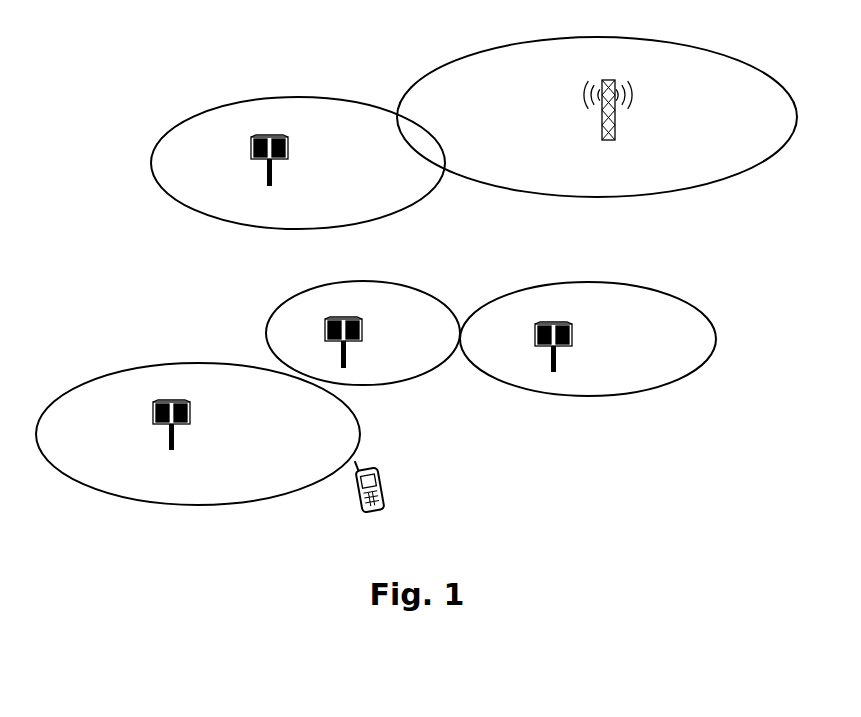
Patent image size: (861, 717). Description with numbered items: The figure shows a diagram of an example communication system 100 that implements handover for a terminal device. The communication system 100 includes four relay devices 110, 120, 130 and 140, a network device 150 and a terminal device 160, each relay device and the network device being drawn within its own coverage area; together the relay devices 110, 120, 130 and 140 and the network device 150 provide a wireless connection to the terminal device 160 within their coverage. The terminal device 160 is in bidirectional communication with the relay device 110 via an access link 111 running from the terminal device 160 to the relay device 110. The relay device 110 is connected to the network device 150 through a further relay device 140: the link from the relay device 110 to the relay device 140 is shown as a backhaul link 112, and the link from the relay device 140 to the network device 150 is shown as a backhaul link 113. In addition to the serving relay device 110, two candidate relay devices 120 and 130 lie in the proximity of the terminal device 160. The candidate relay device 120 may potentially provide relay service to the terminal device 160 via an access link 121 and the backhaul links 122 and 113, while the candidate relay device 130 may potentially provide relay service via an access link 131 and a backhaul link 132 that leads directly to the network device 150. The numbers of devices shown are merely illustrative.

The communication system 100 is at (221, 43).
The relay device 110 is at (186, 401).
The access link 111 is at (358, 478).
The backhaul link 112 is at (177, 393).
The backhaul link 113 is at (307, 163).
The candidate relay device 120 is at (352, 318).
The access link 121 is at (365, 348).
The backhaul link 122 is at (345, 313).
The candidate relay device 130 is at (566, 323).
The access link 131 is at (383, 468).
The backhaul link 132 is at (585, 133).
The relay device 140 is at (287, 135).
The network device 150 is at (612, 78).
The terminal device 160 is at (385, 487).